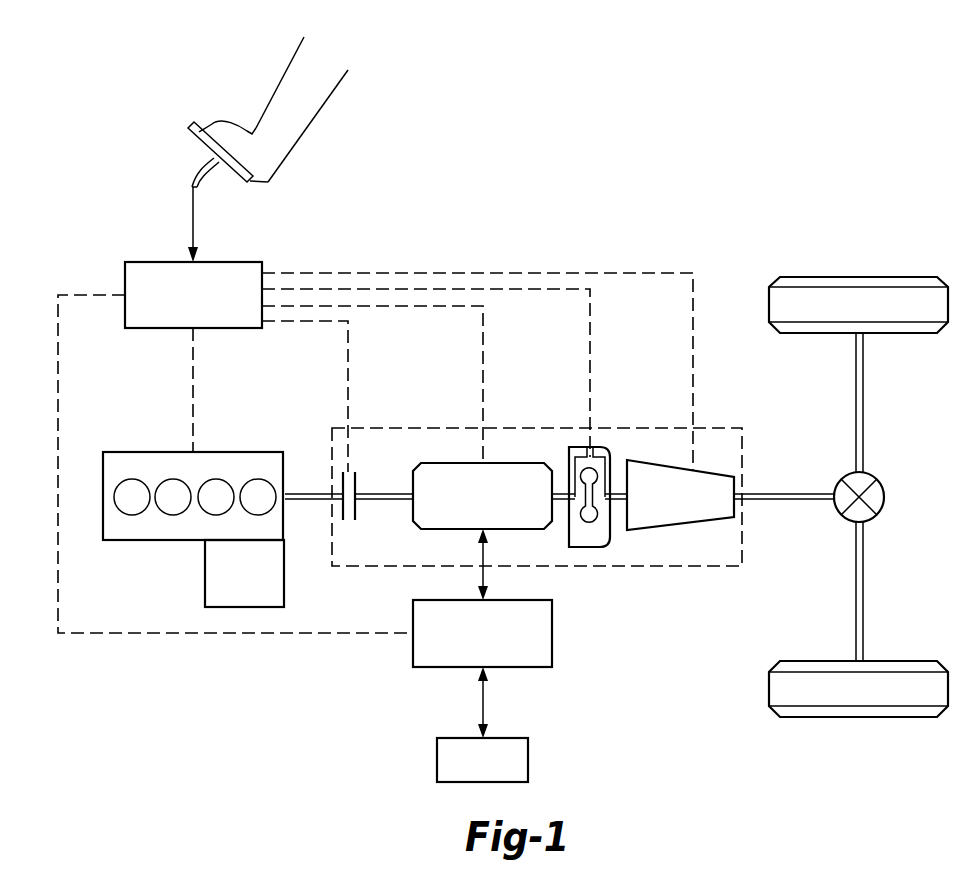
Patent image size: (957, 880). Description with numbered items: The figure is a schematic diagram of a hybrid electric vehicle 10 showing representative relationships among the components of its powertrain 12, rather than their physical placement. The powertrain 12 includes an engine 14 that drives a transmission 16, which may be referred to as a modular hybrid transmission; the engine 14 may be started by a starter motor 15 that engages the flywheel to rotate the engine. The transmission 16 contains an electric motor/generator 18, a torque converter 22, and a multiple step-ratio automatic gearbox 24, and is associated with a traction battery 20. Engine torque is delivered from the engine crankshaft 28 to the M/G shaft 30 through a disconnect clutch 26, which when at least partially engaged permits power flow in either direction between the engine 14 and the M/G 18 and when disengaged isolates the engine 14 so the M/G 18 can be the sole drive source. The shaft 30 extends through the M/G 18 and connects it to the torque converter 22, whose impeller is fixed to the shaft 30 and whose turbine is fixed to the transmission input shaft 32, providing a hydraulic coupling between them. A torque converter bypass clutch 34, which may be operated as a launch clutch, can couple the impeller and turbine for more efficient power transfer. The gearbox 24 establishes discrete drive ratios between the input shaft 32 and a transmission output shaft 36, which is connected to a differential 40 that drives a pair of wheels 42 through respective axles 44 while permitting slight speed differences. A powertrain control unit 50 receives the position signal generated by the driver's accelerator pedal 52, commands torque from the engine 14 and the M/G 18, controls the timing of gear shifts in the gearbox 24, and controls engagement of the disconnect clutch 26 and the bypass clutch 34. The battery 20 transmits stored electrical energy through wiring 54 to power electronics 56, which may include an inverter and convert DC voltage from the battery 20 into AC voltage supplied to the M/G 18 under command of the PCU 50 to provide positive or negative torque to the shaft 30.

The hybrid electric vehicle 10 is at (754, 203).
The powertrain 12 is at (279, 679).
The engine 14 is at (122, 452).
The starter motor 15 is at (205, 575).
The transmission 16 is at (522, 428).
The electric motor/generator (M/G) 18 is at (460, 463).
The traction battery 20 is at (437, 763).
The torque converter 22 is at (585, 547).
The gearbox 24 is at (675, 530).
The disconnect clutch 26 is at (348, 514).
The engine crankshaft 28 is at (312, 492).
The M/G shaft 30 is at (388, 492).
The transmission input shaft 32 is at (616, 492).
The torque converter bypass clutch 34 is at (592, 446).
The transmission output shaft 36 is at (800, 492).
The differential 40 is at (884, 497).
The wheels 42 is at (859, 277).
The axles 44 is at (863, 403).
The powertrain control unit (PCU) 50 is at (140, 262).
The accelerator pedal 52 is at (189, 131).
The wiring 54 is at (480, 703).
The power electronics 56 is at (553, 633).